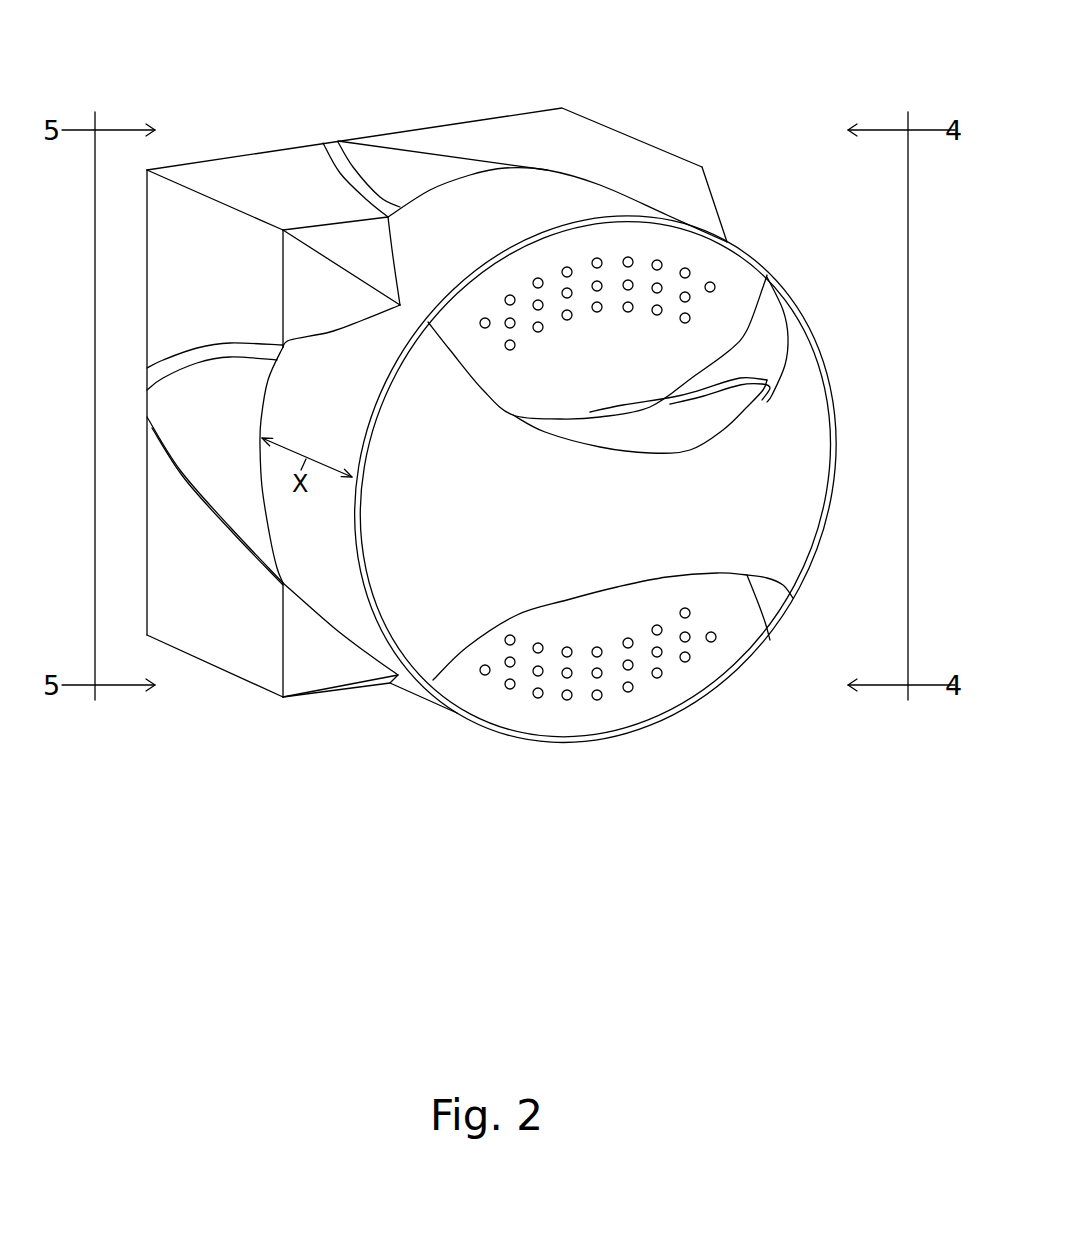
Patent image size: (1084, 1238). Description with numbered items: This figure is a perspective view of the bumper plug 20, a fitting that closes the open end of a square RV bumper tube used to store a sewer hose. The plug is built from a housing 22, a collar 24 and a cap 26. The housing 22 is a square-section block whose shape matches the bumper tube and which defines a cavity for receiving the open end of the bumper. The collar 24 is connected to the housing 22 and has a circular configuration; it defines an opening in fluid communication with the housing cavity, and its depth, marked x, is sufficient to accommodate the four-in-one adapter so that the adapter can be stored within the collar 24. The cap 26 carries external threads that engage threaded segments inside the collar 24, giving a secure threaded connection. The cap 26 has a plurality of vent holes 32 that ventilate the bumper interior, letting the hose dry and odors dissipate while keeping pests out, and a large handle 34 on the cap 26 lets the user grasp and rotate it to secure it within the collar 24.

The bumper plug 20 is at (690, 82).
The housing 22 is at (424, 158).
The collar 24 is at (525, 149).
The cap 26 is at (596, 479).
The vent holes 32 is at (710, 287).
The handle 34 is at (748, 558).